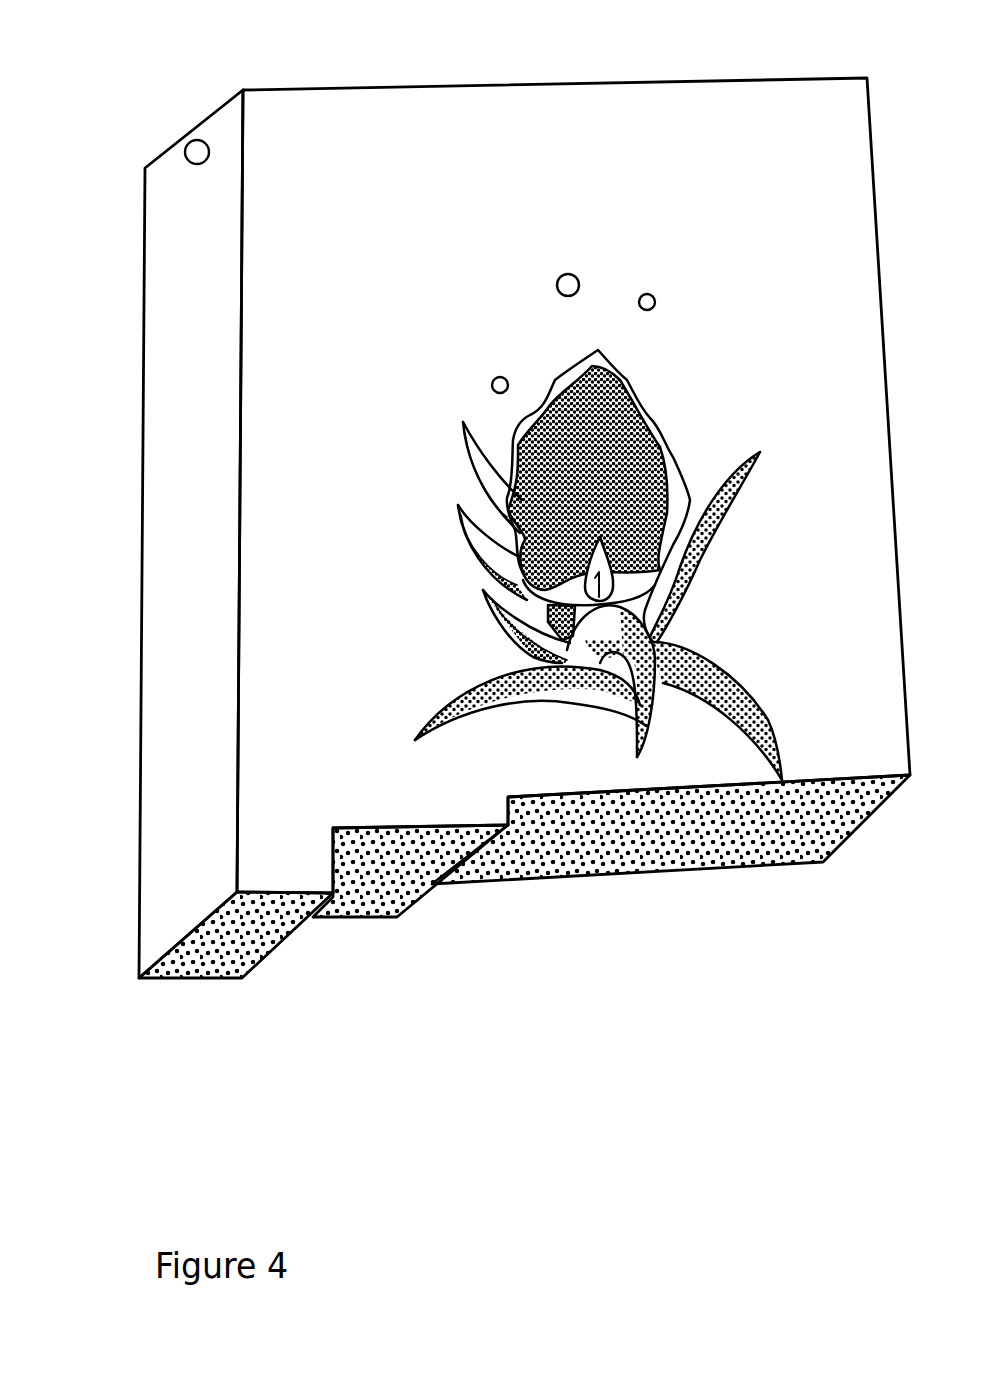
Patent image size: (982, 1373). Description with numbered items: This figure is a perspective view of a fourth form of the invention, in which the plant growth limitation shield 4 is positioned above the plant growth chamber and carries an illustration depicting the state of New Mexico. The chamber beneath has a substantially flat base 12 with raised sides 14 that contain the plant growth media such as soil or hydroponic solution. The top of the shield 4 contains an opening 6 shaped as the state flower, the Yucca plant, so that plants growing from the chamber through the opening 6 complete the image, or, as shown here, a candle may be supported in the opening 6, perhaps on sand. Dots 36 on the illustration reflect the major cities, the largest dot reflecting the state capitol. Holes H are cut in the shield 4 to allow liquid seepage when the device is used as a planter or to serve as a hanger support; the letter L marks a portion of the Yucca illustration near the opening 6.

The plant growth limitation shield 4 is at (410, 227).
The raised sides 14 is at (218, 495).
The substantially flat base 12 is at (573, 527).
The dots 36 is at (497, 377).
The opening 6 is at (668, 462).
The holes H is at (189, 143).
The leaf L is at (630, 527).